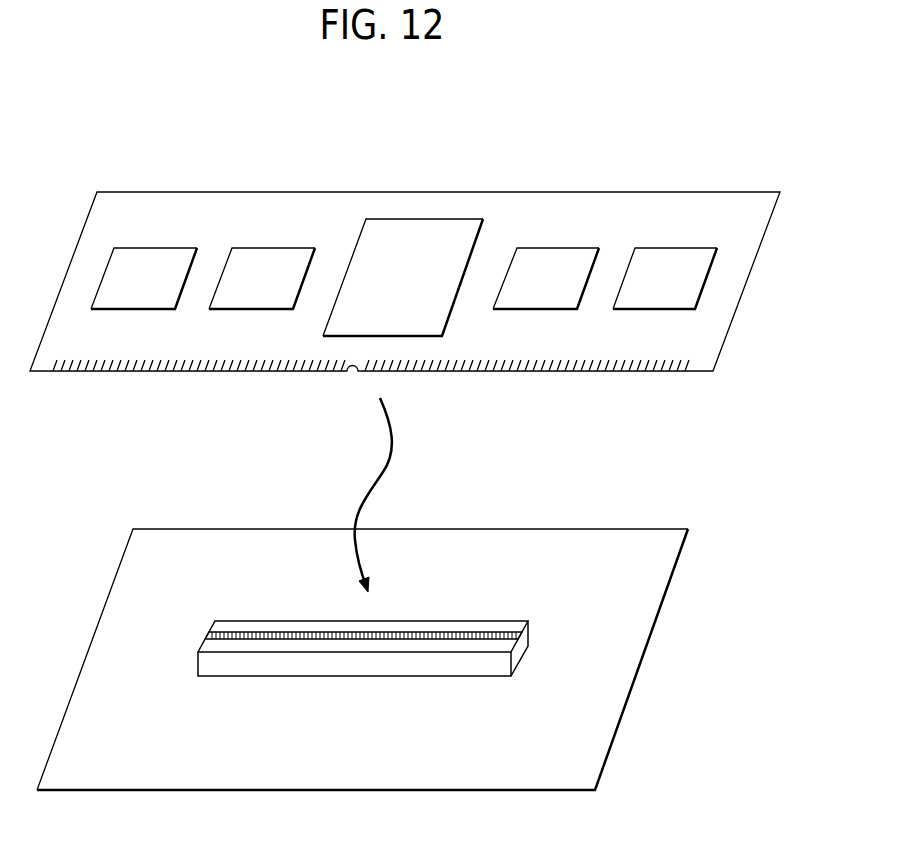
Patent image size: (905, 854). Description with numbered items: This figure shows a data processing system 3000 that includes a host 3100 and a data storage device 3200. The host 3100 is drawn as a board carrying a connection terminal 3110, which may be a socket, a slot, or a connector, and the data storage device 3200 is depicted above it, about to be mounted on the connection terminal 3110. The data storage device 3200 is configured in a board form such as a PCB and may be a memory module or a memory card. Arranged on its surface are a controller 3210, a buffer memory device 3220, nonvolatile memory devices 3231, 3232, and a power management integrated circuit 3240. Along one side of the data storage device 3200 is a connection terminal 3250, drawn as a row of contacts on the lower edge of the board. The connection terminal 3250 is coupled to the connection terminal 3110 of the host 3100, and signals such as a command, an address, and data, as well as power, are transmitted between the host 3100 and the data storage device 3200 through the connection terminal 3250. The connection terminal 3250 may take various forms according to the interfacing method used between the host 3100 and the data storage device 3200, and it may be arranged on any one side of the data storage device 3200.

The data processing system 3000 is at (27, 128).
The host 3100 is at (362, 659).
The connection terminal 3110 is at (528, 622).
The data storage device 3200 is at (405, 306).
The controller 3210 is at (403, 277).
The buffer memory device 3220 is at (262, 278).
The nonvolatile memory device 3231 is at (546, 278).
The nonvolatile memory device 3232 is at (665, 278).
The power management integrated circuit 3240 is at (144, 278).
The connection terminal 3250 is at (73, 372).